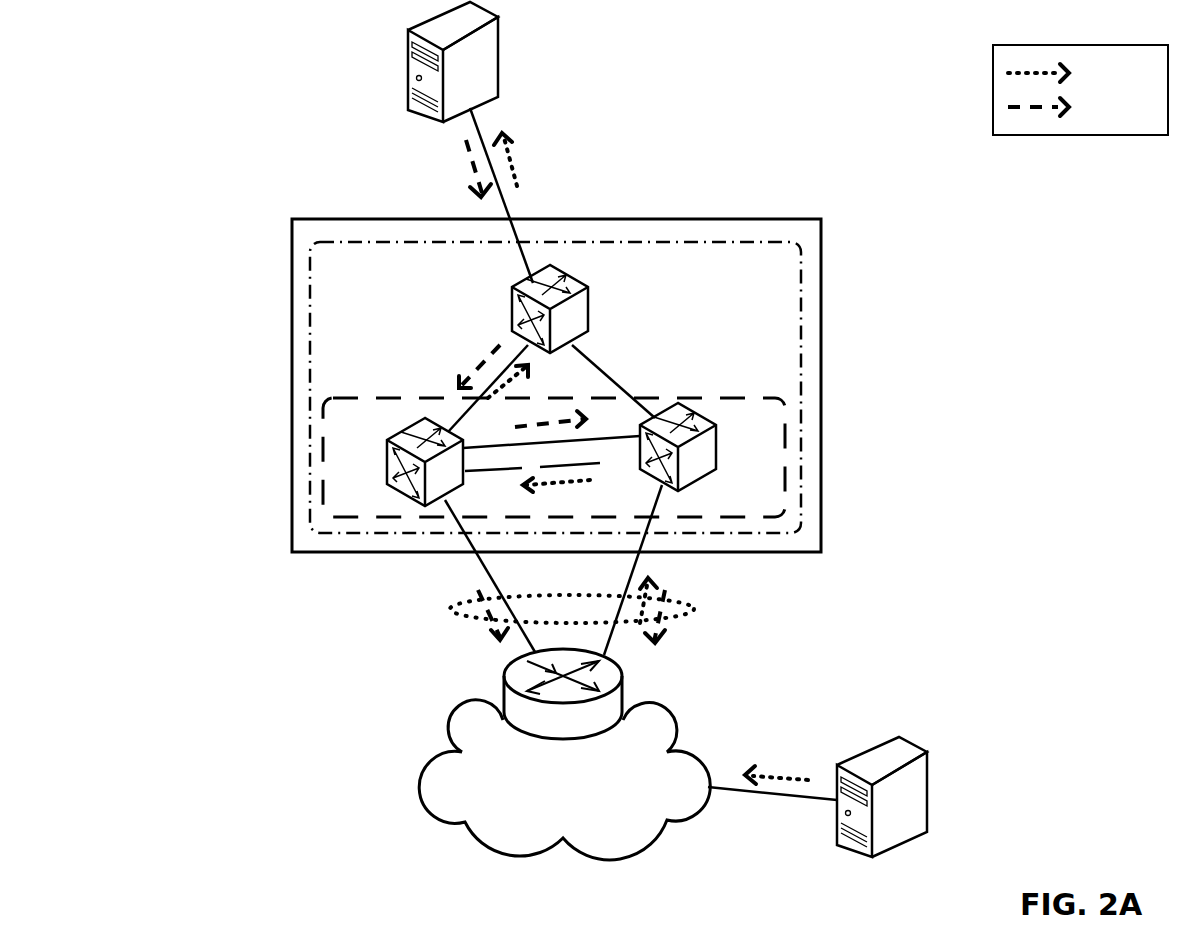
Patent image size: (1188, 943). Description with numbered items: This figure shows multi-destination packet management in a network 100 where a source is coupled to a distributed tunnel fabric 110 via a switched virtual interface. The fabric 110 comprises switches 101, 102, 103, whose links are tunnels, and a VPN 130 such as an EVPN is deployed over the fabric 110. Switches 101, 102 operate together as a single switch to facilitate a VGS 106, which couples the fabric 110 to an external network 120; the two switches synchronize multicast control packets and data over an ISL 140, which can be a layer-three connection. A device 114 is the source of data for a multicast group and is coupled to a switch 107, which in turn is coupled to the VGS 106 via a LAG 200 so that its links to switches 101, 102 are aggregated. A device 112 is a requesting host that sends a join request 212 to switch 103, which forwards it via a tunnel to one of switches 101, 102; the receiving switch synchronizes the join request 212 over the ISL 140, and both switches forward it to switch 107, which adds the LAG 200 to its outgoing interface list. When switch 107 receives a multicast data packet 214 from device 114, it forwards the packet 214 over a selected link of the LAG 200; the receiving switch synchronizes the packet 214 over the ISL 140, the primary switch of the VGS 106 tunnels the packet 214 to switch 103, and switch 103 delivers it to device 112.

The network 100 is at (165, 104).
The distributed tunnel fabric 110 is at (740, 218).
The VPN 130 is at (800, 267).
The VGS 106 is at (763, 517).
The switch 101 is at (386, 462).
The switch 102 is at (717, 447).
The switch 103 is at (590, 303).
The ISL 140 is at (642, 457).
The switch 107 is at (625, 706).
The LAG 200 is at (450, 610).
The external network 120 is at (628, 780).
The device 112 is at (408, 57).
The device 114 is at (910, 843).
The join request 212 is at (470, 163).
The multicast data packet 214 is at (777, 772).